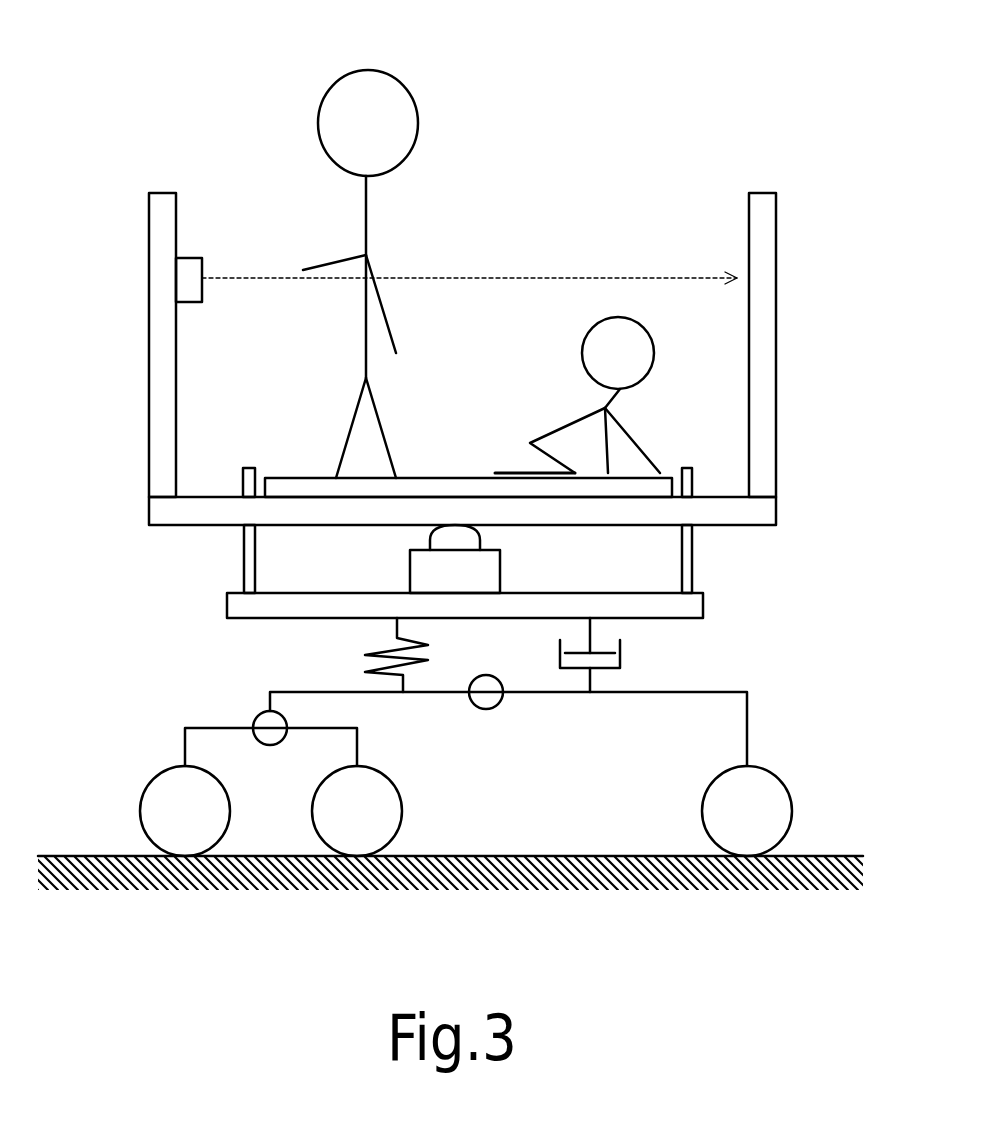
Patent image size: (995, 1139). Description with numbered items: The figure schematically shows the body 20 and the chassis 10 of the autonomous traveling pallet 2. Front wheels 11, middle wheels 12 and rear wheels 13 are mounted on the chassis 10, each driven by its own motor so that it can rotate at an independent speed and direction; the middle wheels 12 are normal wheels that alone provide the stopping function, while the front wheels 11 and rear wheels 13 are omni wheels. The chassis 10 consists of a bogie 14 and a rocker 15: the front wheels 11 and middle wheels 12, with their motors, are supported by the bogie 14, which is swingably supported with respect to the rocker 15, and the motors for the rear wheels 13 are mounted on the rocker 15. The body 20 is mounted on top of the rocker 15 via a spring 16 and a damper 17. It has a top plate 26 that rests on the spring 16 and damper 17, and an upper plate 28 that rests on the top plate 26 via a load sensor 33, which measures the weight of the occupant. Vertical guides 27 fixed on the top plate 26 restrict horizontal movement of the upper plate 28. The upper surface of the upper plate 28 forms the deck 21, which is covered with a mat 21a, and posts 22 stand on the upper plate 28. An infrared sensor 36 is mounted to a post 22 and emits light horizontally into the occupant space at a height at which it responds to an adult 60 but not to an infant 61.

The autonomous traveling pallet 2 is at (150, 162).
The chassis 10 is at (138, 702).
The front wheels 11 is at (140, 812).
The middle wheels 12 is at (402, 815).
The rear wheels 13 is at (792, 815).
The bogie 14 is at (223, 727).
The rocker 15 is at (737, 692).
The spring 16 is at (365, 653).
The damper 17 is at (620, 648).
The body 20 is at (118, 506).
The deck 21 is at (407, 496).
The mat 21a is at (482, 476).
The posts 22 is at (149, 386).
The top plate 26 is at (227, 608).
The guides 27 is at (244, 562).
The upper plate 28 is at (776, 510).
The load sensor 33 is at (500, 560).
The infrared sensor 36 is at (203, 272).
The adult 60 is at (326, 96).
The infant 61 is at (584, 358).